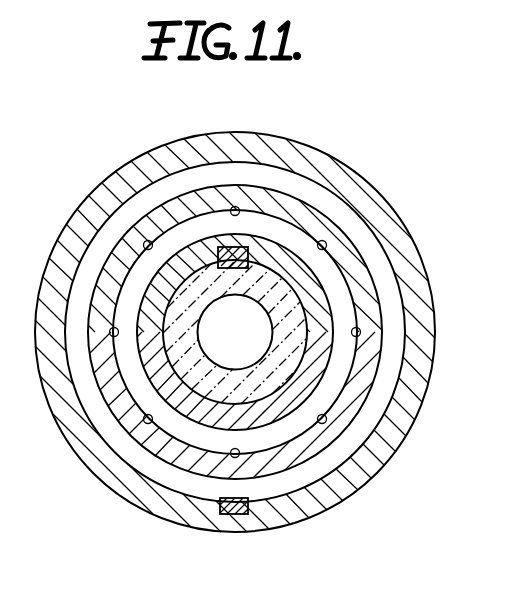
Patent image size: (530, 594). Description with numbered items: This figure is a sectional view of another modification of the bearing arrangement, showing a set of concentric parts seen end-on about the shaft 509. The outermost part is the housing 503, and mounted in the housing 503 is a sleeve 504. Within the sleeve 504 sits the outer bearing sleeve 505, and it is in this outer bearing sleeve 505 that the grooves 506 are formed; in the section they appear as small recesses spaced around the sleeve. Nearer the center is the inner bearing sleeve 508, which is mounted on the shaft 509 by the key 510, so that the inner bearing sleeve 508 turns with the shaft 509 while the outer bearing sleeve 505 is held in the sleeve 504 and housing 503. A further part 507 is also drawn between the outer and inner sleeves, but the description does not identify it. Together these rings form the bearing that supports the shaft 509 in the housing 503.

The housing 503 is at (144, 162).
The sleeve 504 is at (209, 167).
The outer bearing sleeve 505 is at (287, 191).
The grooves 506 is at (112, 327).
The annular space 507 is at (303, 264).
The inner bearing sleeve 508 is at (338, 257).
The shaft 509 is at (184, 366).
The key 510 is at (240, 262).